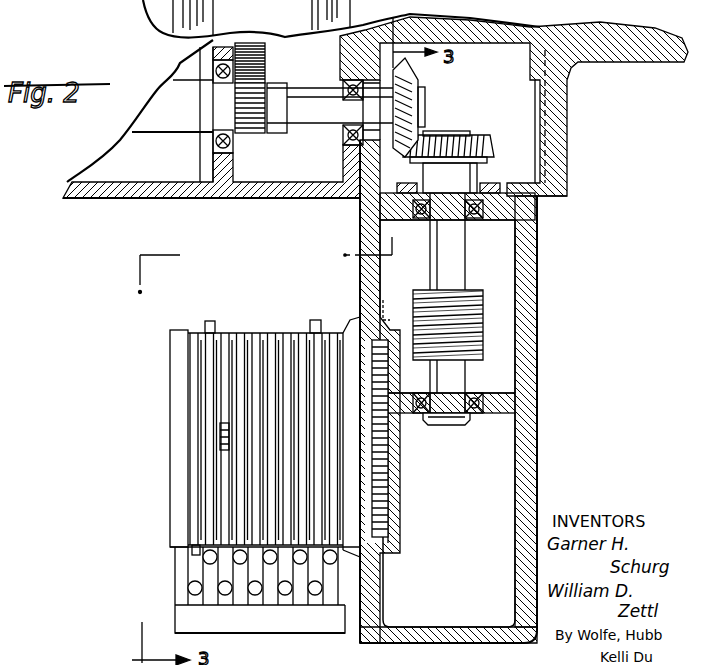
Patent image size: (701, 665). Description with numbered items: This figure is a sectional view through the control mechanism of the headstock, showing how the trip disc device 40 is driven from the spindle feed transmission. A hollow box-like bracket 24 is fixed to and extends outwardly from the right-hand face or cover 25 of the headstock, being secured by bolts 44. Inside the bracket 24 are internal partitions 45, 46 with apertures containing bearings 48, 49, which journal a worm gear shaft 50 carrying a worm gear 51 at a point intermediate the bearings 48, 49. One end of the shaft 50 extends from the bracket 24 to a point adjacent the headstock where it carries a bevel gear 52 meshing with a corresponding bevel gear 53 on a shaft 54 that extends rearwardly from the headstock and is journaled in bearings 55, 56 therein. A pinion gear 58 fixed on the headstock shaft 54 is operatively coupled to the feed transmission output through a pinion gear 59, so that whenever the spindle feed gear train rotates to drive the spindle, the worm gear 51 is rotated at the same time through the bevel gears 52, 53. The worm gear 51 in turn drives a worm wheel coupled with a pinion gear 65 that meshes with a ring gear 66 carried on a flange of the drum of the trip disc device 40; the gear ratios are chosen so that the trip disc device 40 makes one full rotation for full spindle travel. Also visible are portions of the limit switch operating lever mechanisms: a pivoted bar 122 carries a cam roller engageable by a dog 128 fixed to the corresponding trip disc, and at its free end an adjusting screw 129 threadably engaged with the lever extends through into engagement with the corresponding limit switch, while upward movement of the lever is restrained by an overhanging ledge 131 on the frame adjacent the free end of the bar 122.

The bracket 24 is at (533, 452).
The right-hand face or cover 25 is at (97, 200).
The trip disc device 40 is at (168, 417).
The bolts 44 is at (543, 153).
The internal partition 45 is at (507, 197).
The internal partition 46 is at (492, 407).
The bearing 48 is at (470, 218).
The bearing 49 is at (473, 414).
The worm gear shaft 50 is at (440, 250).
The worm gear 51 is at (478, 314).
The bevel gear 52 is at (475, 147).
The bevel gear 53 is at (420, 78).
The shaft 54 is at (309, 118).
The bearing 55 is at (343, 150).
The bearing 56 is at (213, 147).
The pinion gear 58 is at (252, 130).
The pinion gear 59 is at (266, 62).
The pinion gear 65 is at (360, 291).
The ring gear 66 is at (384, 473).
The bar 122 is at (195, 575).
The dog 128 is at (207, 322).
The adjusting screw 129 is at (222, 594).
The overhanging ledge 131 is at (256, 606).